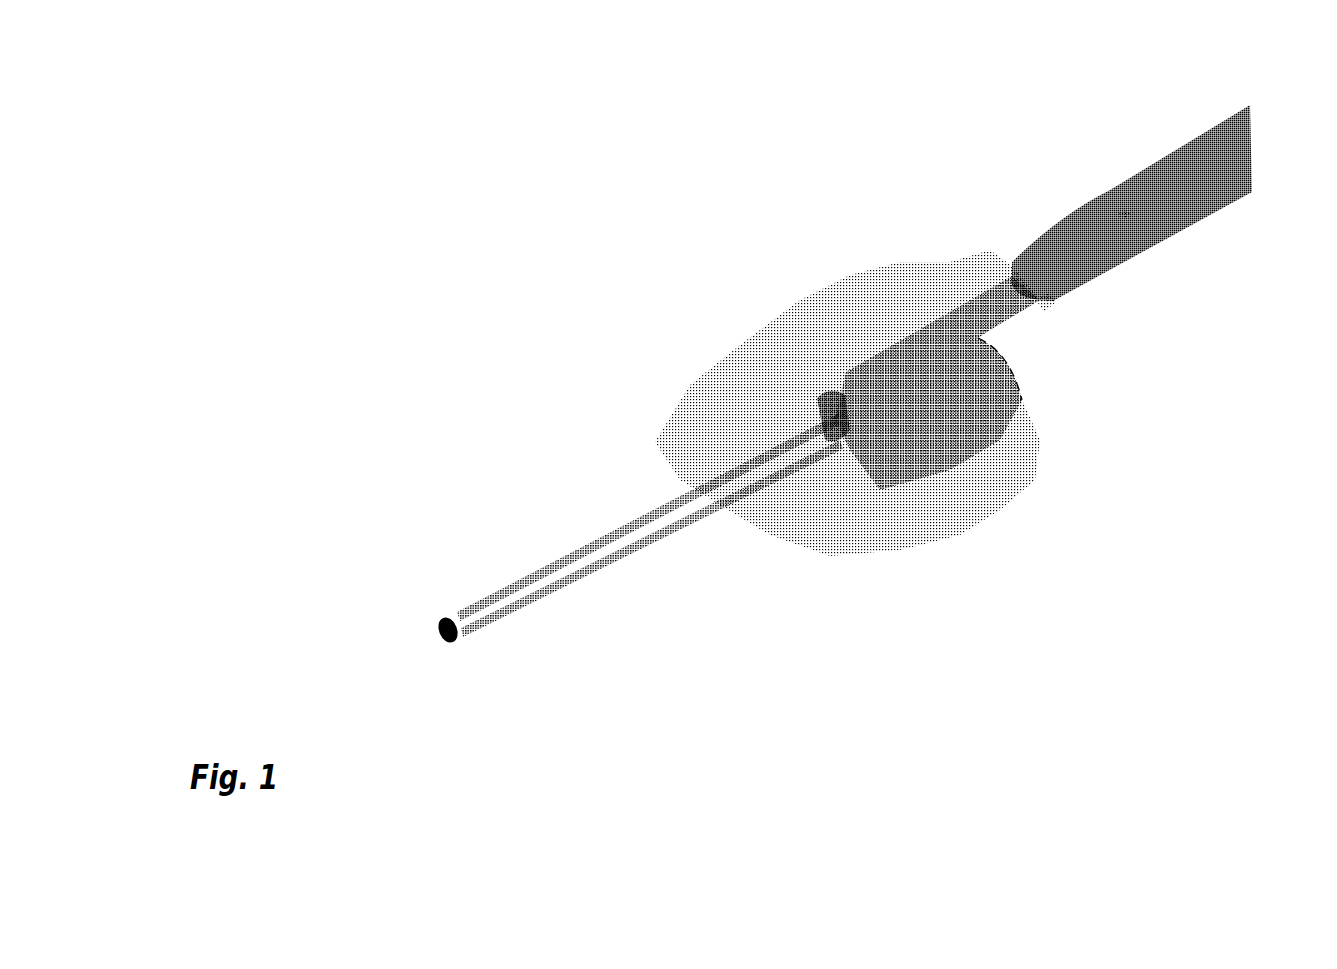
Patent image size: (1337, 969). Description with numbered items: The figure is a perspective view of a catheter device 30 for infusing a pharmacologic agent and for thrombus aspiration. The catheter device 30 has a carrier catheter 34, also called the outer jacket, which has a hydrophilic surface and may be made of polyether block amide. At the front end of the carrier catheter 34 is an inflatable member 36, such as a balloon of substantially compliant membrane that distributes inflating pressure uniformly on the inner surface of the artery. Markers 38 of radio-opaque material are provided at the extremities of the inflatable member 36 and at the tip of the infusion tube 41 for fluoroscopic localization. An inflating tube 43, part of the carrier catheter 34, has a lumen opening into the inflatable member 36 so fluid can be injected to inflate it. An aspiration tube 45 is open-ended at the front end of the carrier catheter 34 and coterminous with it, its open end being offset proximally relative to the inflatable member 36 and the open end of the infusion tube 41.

The catheter device 30 is at (567, 279).
The carrier catheter 34 is at (1072, 164).
The inflatable member 36 is at (933, 440).
The markers 38 is at (445, 617).
The infusion tube 41 is at (557, 577).
The inflating tube 43 is at (1022, 400).
The aspiration tube 45 is at (1120, 213).